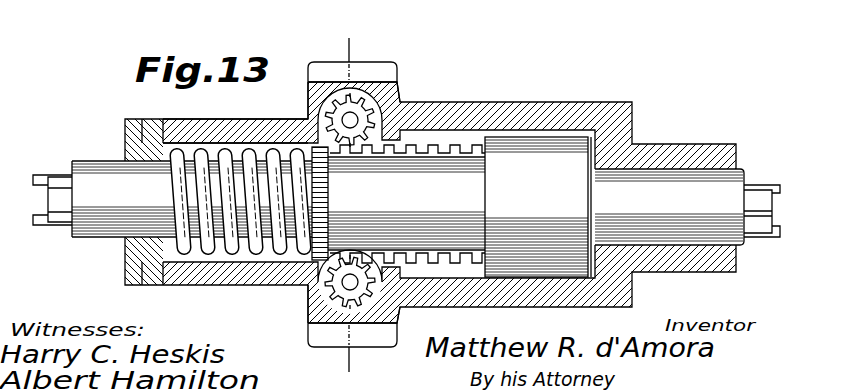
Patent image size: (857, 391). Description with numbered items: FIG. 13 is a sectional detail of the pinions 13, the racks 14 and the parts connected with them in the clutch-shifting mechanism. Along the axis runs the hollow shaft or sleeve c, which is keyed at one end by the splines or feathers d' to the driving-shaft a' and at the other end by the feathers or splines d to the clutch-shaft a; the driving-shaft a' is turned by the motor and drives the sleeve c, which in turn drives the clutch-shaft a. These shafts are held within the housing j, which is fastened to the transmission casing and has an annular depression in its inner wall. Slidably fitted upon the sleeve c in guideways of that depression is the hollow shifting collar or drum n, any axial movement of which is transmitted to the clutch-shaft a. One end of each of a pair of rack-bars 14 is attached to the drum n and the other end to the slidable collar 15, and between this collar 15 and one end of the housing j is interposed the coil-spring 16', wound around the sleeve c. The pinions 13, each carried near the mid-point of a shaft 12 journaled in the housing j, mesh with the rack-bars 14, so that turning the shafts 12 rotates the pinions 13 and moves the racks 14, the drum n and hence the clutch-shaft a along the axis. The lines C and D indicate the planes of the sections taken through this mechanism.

The housing j is at (489, 102).
The section line C— C is at (663, 152).
The coil-spring 16' is at (235, 114).
The hollow shaft or sleeve c is at (408, 203).
The slidable collar 15 is at (322, 203).
The rack-bars 14 is at (443, 253).
The hollow shifting collar or drum n is at (538, 207).
The shaft 12 is at (399, 84).
The pinion 13 is at (378, 114).
The section line D— D is at (347, 202).
The clutch-shaft a is at (41, 199).
The feathers or splines d is at (52, 204).
The driving-shaft a' is at (770, 211).
The splines or feathers d' is at (763, 210).